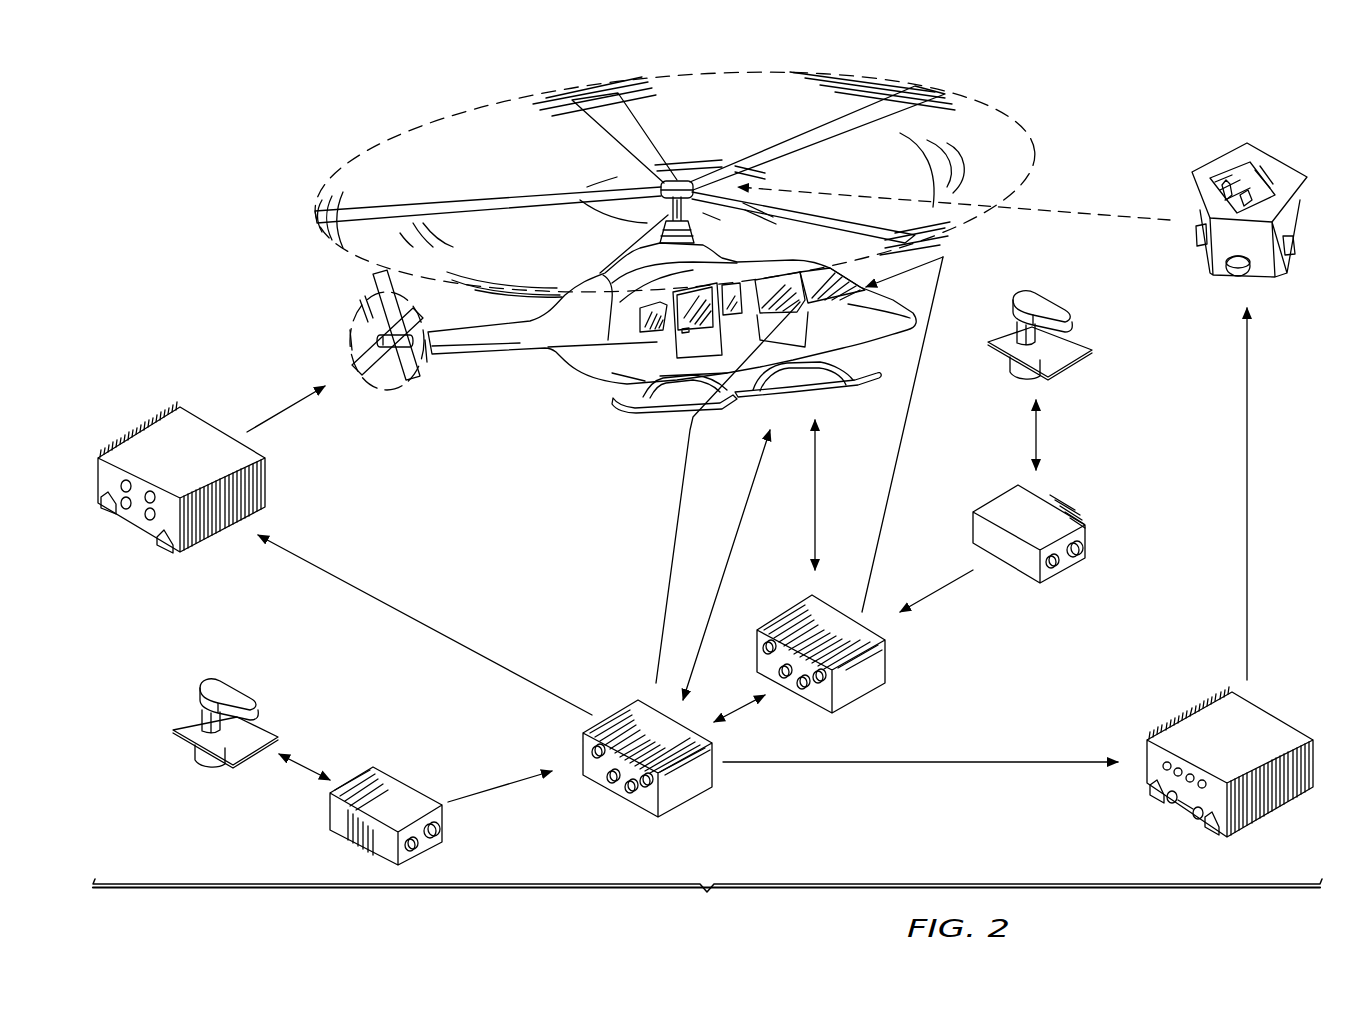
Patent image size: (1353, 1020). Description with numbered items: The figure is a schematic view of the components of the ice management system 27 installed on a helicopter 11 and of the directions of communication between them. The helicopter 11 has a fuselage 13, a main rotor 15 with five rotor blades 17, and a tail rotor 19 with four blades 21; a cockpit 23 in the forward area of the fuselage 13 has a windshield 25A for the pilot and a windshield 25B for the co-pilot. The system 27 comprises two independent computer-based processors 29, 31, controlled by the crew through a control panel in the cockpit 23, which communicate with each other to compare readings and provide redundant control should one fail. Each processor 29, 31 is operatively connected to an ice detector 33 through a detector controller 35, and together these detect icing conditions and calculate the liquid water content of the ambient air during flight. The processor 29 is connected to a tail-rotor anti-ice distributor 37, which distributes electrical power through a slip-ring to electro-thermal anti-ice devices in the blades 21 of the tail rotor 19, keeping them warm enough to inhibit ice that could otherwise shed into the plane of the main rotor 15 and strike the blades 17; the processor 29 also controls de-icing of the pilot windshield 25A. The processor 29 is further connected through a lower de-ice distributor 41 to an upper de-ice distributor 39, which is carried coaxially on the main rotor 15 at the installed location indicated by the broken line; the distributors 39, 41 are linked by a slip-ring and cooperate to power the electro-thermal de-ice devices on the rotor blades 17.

The helicopter 11 is at (262, 184).
The fuselage 13 is at (584, 386).
The main rotor 15 is at (674, 182).
The rotor blades 17 is at (528, 190).
The tail rotor 19 is at (349, 354).
The blades 21 is at (392, 382).
The cockpit 23 is at (905, 297).
The windshield 25A is at (800, 292).
The windshield 25B is at (860, 282).
The ice management system 27 is at (707, 901).
The processor 29 is at (686, 790).
The processor 31 is at (858, 688).
The ice detector 33 is at (1046, 306).
The detector controller 35 is at (1002, 500).
The tail-rotor anti-ice distributor 37 is at (203, 428).
The upper de-ice distributor 39 is at (1281, 170).
The lower de-ice distributor 41 is at (1265, 718).